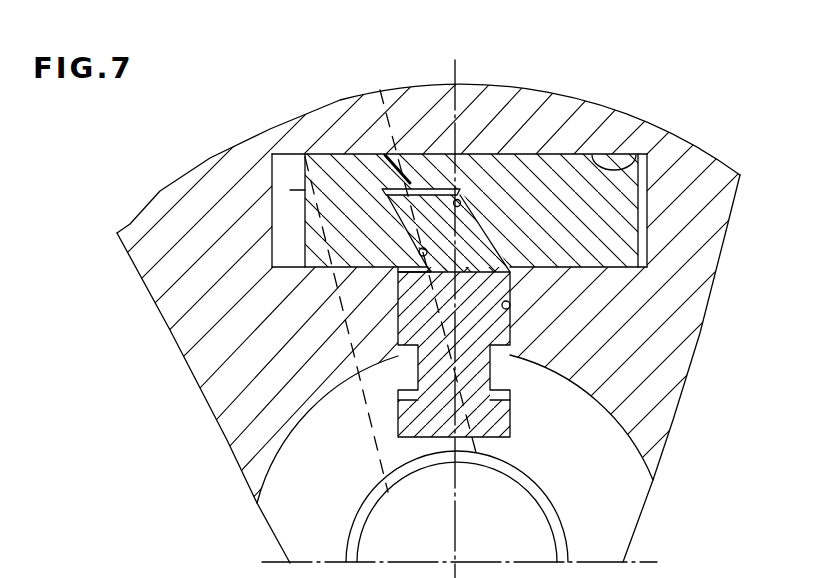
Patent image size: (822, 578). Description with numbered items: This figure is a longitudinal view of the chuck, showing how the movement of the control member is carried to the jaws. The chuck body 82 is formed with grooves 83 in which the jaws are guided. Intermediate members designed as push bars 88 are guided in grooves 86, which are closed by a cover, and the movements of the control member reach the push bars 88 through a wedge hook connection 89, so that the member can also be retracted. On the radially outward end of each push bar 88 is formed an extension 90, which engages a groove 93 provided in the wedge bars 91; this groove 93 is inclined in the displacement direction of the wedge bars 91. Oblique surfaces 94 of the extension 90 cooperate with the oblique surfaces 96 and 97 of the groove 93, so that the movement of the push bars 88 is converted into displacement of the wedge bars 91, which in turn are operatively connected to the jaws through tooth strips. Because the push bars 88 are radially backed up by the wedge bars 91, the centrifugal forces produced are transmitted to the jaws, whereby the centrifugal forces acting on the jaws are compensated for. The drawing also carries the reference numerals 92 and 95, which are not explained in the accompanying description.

The chuck body 82 is at (611, 105).
The grooves of chuck body 83 is at (299, 145).
The grooves 86 is at (510, 317).
The push bars 88 is at (398, 315).
The wedge hook connection 89 is at (538, 427).
The extension 90 is at (385, 155).
The wedge bars 91 is at (304, 188).
The right side plate 92 is at (638, 153).
The groove 93 is at (425, 189).
The oblique surface of extension 94 is at (473, 208).
The retaining pin 95 is at (421, 249).
The oblique surface of groove 96 is at (460, 203).
The oblique surface of groove 97 is at (420, 256).